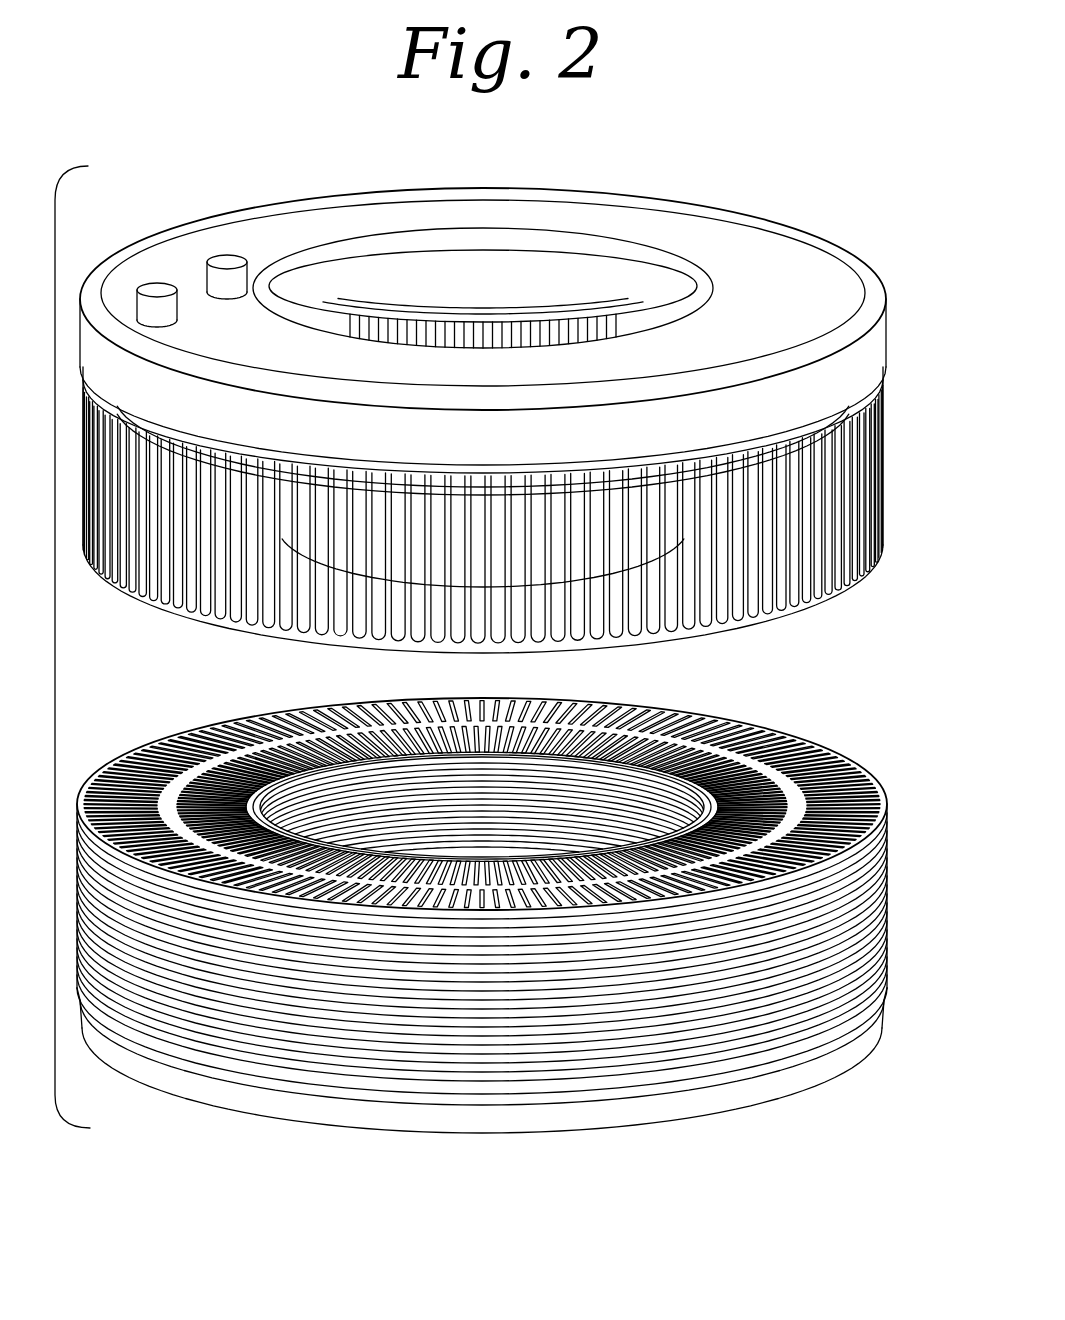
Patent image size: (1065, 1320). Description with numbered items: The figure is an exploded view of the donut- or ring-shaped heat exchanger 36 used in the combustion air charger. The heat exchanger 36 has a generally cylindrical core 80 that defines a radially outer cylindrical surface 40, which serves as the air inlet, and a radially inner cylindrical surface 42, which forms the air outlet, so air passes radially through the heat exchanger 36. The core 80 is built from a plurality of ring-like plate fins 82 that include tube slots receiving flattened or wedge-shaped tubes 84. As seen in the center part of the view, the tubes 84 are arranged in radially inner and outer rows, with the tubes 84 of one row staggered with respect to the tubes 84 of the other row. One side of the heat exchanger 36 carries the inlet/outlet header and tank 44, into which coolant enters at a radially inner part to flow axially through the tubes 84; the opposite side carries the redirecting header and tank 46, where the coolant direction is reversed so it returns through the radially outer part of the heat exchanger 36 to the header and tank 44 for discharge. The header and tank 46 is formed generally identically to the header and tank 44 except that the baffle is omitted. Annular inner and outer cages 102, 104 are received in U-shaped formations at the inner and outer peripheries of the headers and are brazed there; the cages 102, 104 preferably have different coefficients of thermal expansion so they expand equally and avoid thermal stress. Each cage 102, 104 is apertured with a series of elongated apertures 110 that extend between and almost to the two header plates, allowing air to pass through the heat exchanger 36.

The heat exchanger 36 is at (106, 592).
The radially outer cylindrical surface 40 is at (499, 843).
The radially inner cylindrical surface 42 is at (545, 768).
The inlet/outlet header and tank 44 is at (483, 292).
The redirecting header and tank 46 is at (482, 1096).
The core 80 is at (482, 1113).
The plate fins 82 is at (482, 985).
The tubes 84 is at (475, 963).
The inner cage 102 is at (483, 363).
The outer cage 104 is at (509, 466).
The elongated apertures 110 is at (475, 396).